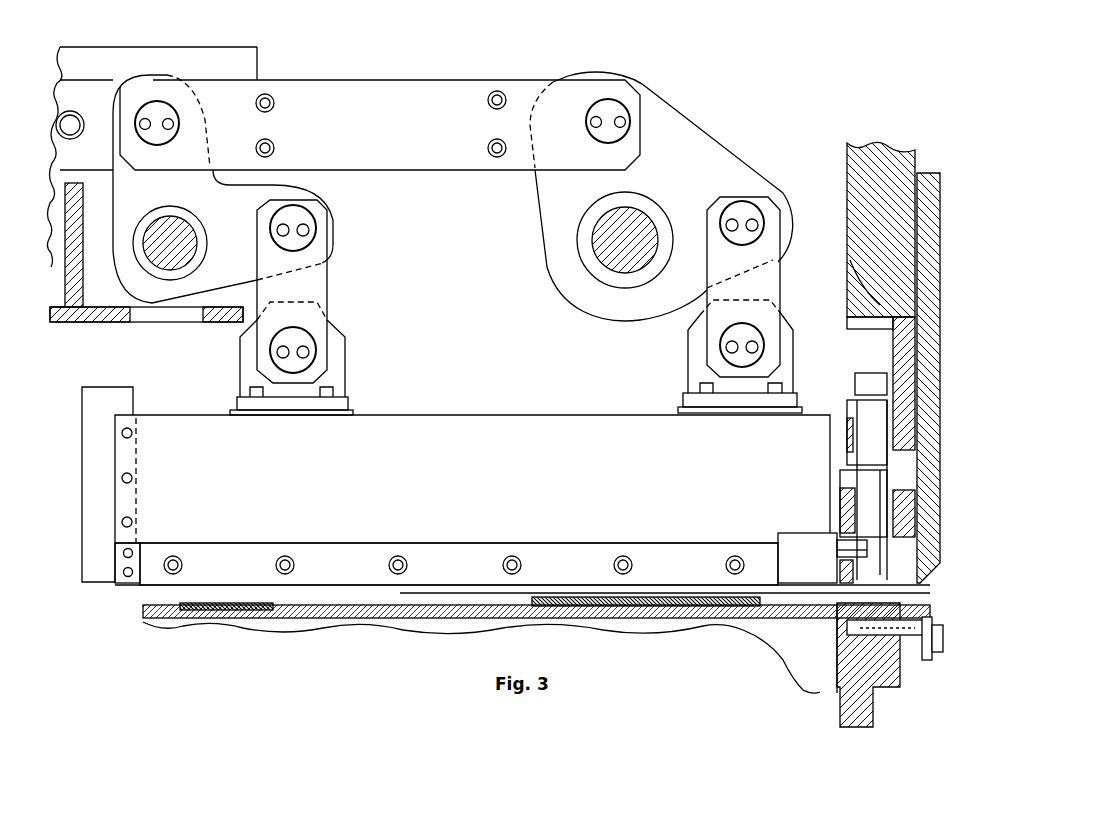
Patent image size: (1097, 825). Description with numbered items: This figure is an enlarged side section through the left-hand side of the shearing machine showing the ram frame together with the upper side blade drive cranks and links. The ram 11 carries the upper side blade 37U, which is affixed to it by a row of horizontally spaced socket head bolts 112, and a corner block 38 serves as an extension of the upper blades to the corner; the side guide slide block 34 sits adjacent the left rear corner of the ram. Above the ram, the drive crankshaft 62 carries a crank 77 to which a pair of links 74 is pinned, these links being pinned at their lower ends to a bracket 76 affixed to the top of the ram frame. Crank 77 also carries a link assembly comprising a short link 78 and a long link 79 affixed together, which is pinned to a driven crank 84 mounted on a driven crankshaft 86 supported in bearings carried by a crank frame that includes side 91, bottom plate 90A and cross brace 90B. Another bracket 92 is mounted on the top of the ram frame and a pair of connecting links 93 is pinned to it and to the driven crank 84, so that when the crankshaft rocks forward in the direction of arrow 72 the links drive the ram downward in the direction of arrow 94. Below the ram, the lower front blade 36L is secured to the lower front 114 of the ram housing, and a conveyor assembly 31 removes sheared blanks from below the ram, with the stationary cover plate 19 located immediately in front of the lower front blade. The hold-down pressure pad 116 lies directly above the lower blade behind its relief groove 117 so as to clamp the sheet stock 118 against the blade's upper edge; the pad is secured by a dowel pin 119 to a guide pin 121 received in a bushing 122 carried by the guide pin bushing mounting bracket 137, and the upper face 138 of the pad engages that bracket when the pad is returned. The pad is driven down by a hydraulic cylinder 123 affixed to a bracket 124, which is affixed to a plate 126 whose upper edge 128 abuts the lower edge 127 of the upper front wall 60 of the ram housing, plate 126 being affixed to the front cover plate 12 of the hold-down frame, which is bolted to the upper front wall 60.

The ram 11 is at (471, 484).
The front cover plate 12 is at (930, 180).
The stationary cover plate 19 is at (905, 580).
The conveyor assembly 31 is at (381, 635).
The side guide slide block 34 is at (130, 400).
The lower front blade 36L is at (850, 665).
The upper side blade 37U is at (543, 560).
The corner block 38 is at (798, 543).
The upper front wall 60 is at (853, 165).
The crankshaft 62 is at (600, 238).
The direction arrow 72 is at (560, 312).
The links 74 is at (763, 283).
The bracket 76 is at (782, 330).
The crank 77 is at (720, 164).
The short link 78 is at (411, 134).
The long link 79 is at (98, 100).
The driven crank 84 is at (237, 210).
The driven crankshaft 86 is at (163, 263).
The bottom plate 90A is at (220, 313).
The cross brace 90B is at (73, 300).
The crank frame side 91 is at (237, 57).
The bracket 92 is at (333, 360).
The connecting links 93 is at (313, 280).
The direction arrow 94 is at (558, 390).
The socket head bolts 112 is at (183, 563).
The lower front 114 is at (850, 707).
The pressure pad 116 is at (833, 597).
The relief groove 117 is at (860, 598).
The sheet stock 118 is at (658, 598).
The dowel pin 119 is at (850, 553).
The guide pin 121 is at (920, 660).
The bushing 122 is at (850, 490).
The hydraulic cylinder 123 is at (857, 383).
The bracket 124 is at (848, 415).
The plate 126 is at (893, 345).
The lower edge 127 is at (867, 320).
The upper edge 128 is at (873, 303).
The guide pin bushing mounting bracket 137 is at (850, 500).
The upper face 138 is at (840, 507).